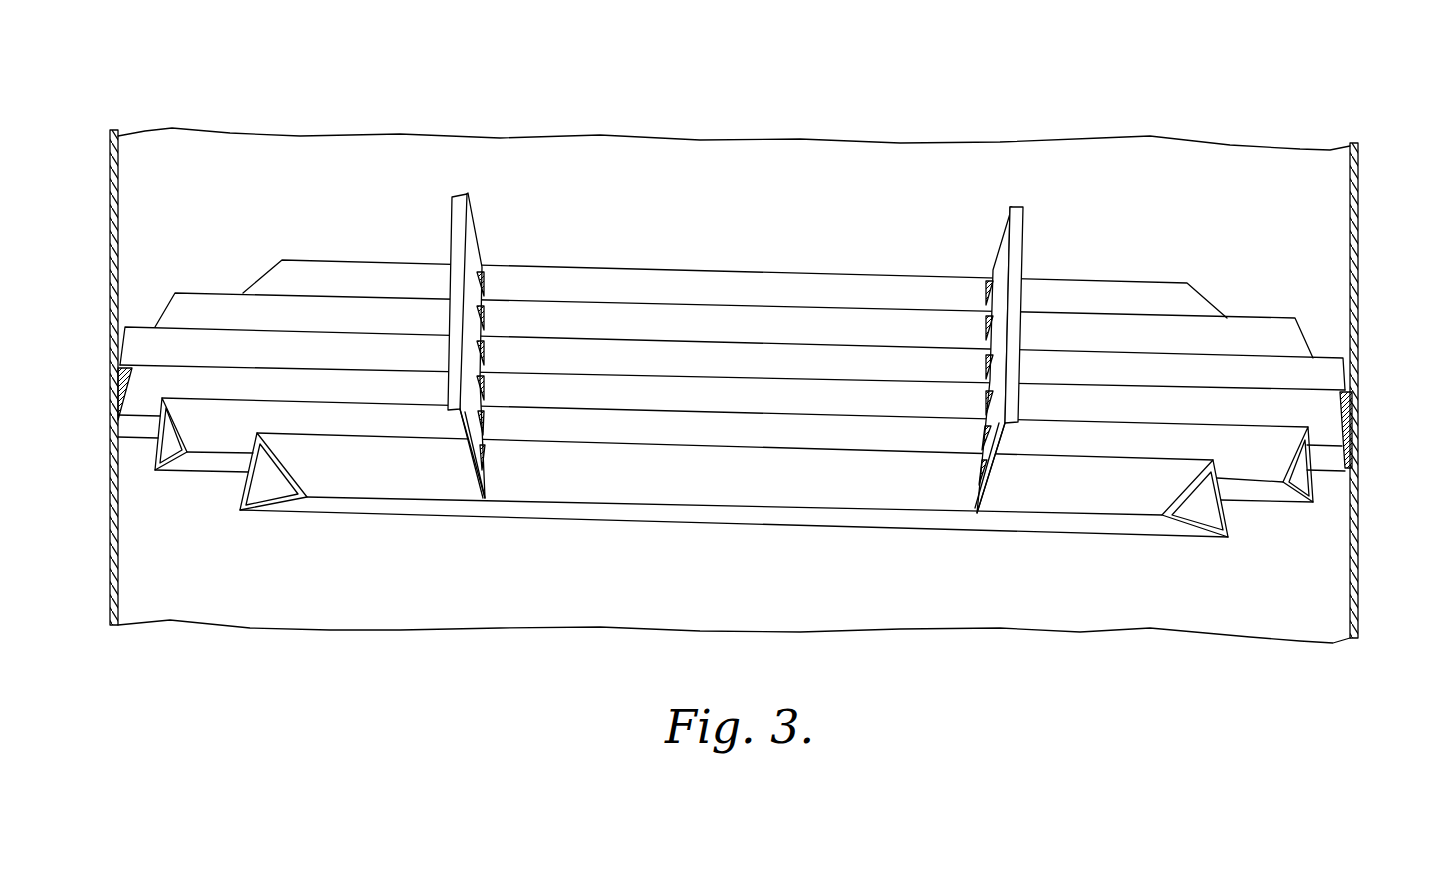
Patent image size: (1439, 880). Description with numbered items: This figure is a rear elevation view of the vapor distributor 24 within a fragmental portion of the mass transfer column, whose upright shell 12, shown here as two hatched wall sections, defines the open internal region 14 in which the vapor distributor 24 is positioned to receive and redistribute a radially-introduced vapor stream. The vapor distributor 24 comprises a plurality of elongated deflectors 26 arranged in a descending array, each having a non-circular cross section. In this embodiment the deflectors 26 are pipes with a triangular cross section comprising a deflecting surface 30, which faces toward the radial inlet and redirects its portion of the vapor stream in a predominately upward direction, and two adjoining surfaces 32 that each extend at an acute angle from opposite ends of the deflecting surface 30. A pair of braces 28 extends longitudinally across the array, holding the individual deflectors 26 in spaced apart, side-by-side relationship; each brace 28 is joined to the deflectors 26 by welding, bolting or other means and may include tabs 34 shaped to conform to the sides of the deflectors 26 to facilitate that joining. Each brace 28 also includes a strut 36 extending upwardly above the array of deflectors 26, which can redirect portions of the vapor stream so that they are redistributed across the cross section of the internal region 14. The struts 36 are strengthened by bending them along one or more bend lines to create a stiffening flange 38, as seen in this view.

The shell 12 is at (1358, 178).
The internal region 14 is at (1297, 222).
The vapor distributor 24 is at (697, 255).
The deflector 26 is at (172, 449).
The brace 28 is at (450, 212).
The deflecting surface 30 is at (1314, 487).
The adjoining surface 32 is at (220, 440).
The tab 34 is at (486, 286).
The strut 36 is at (472, 225).
The stiffening flange 38 is at (452, 356).